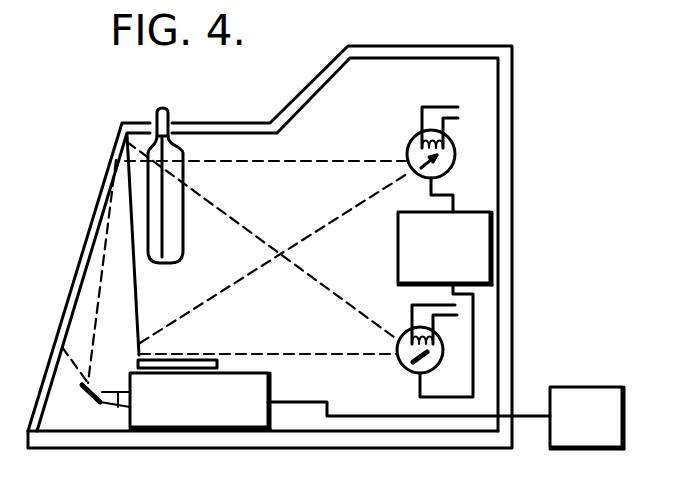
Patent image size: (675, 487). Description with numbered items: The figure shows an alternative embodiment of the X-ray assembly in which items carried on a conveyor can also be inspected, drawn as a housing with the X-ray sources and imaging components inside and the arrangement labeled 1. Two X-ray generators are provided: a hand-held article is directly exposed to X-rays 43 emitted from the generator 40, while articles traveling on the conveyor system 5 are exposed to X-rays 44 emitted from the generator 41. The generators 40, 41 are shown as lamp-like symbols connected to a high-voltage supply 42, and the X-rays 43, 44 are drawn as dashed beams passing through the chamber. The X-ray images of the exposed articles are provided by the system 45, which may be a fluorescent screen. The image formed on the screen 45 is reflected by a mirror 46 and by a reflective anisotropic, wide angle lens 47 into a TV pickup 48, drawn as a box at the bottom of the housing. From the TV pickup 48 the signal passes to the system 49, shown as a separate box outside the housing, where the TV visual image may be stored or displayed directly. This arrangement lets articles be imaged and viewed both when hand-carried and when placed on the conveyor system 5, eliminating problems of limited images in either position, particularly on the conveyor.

The tube 1 is at (177, 156).
The conveyor system 5 is at (188, 359).
The generator 40 is at (455, 161).
The generator 41 is at (397, 341).
The high voltage supply 42 is at (398, 243).
The X-rays 43 is at (322, 160).
The X-rays 44 is at (318, 357).
The fluorescent screen 45 is at (136, 274).
The mirror 46 is at (105, 243).
The reflective anisotropic wide angle lens 47 is at (88, 392).
The TV pickup 48 is at (200, 401).
The system 49 is at (446, 418).